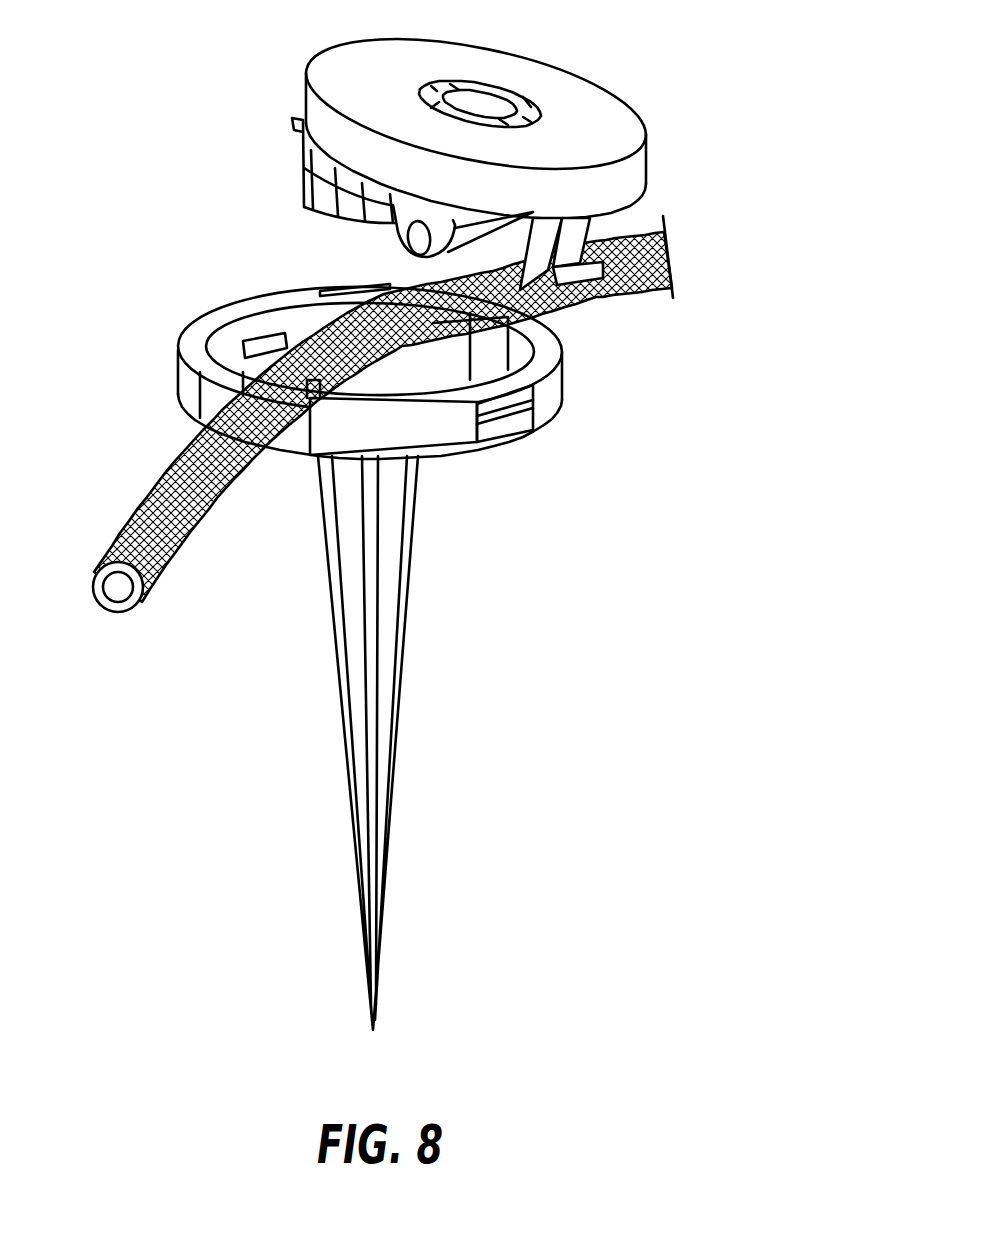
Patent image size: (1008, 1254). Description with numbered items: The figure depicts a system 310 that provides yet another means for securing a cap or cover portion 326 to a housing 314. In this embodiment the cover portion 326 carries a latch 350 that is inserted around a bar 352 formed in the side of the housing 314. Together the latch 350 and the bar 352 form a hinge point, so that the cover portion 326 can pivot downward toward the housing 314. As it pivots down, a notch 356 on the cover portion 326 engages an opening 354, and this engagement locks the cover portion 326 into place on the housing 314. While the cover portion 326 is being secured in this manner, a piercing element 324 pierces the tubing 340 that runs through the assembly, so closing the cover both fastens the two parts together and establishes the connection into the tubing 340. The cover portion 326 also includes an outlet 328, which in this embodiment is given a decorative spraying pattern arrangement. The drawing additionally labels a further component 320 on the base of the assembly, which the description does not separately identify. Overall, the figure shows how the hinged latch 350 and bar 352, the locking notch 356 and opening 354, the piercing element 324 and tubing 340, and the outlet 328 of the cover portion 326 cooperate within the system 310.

The system 310 is at (688, 185).
The housing 314 is at (320, 483).
The base ring 320 is at (365, 383).
The piercing element 324 is at (307, 200).
The cover portion 326 is at (613, 137).
The outlet 328 is at (493, 110).
The tubing 340 is at (650, 275).
The latch 350 is at (303, 182).
The bar 352 is at (520, 427).
The opening 354 is at (258, 340).
The notch 356 is at (287, 243).